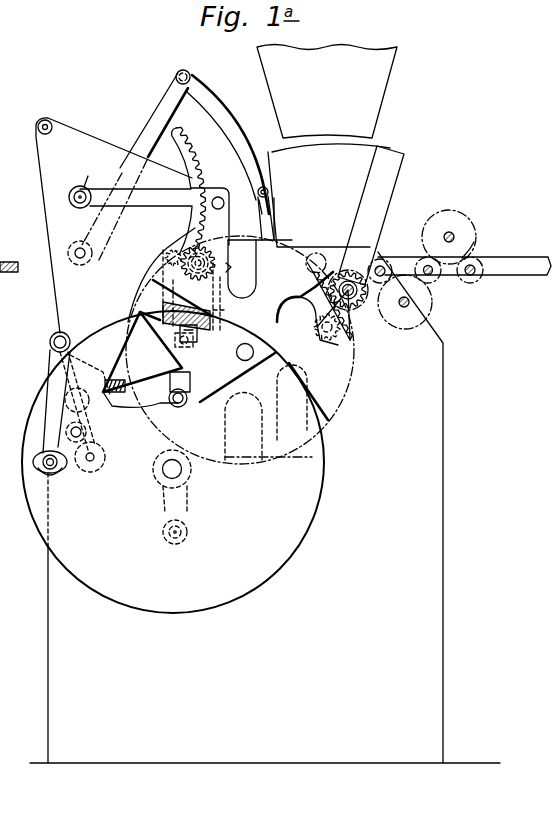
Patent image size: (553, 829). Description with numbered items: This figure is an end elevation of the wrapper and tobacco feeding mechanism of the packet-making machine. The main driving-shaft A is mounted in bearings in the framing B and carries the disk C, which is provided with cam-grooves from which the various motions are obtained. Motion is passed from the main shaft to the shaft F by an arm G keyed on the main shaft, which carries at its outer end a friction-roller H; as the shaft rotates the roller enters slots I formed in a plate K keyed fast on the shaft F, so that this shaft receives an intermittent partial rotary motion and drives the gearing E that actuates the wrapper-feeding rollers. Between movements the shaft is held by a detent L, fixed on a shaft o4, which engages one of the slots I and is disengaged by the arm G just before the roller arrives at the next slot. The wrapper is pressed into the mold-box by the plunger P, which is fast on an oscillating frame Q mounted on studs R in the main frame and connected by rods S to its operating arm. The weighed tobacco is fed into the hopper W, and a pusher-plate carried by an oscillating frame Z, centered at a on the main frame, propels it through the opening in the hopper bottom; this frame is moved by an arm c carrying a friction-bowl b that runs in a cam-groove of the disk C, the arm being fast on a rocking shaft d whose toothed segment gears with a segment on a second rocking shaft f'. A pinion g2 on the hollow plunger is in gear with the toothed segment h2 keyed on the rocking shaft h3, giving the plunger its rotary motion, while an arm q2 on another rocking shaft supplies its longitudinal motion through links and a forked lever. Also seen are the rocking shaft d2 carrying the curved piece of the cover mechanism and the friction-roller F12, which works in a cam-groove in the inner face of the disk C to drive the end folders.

The framing B is at (265, 507).
The disk C is at (173, 462).
The hopper W is at (327, 146).
The plunger P is at (262, 148).
The oscillating frame Z is at (371, 215).
The rods S is at (260, 218).
The shaft F is at (238, 364).
The gearing E is at (405, 302).
The center a is at (360, 341).
The plate K is at (240, 350).
The slots I is at (256, 282).
The oscillating frame Q is at (136, 166).
The studs R is at (86, 256).
The rocking shaft f' is at (114, 215).
The rocking shaft h3 is at (130, 184).
The segment h2 is at (200, 148).
The rocking shaft d2 is at (219, 196).
The pinion g2 is at (203, 250).
The detent L is at (141, 359).
The arm q2 is at (145, 410).
The rocking shaft d is at (50, 342).
The arm c is at (56, 401).
The friction-bowl b is at (62, 475).
The friction-roller F12 is at (92, 466).
The shaft o4 is at (83, 432).
The arm G is at (172, 479).
The main driving-shaft A is at (162, 474).
The friction-roller H is at (187, 535).